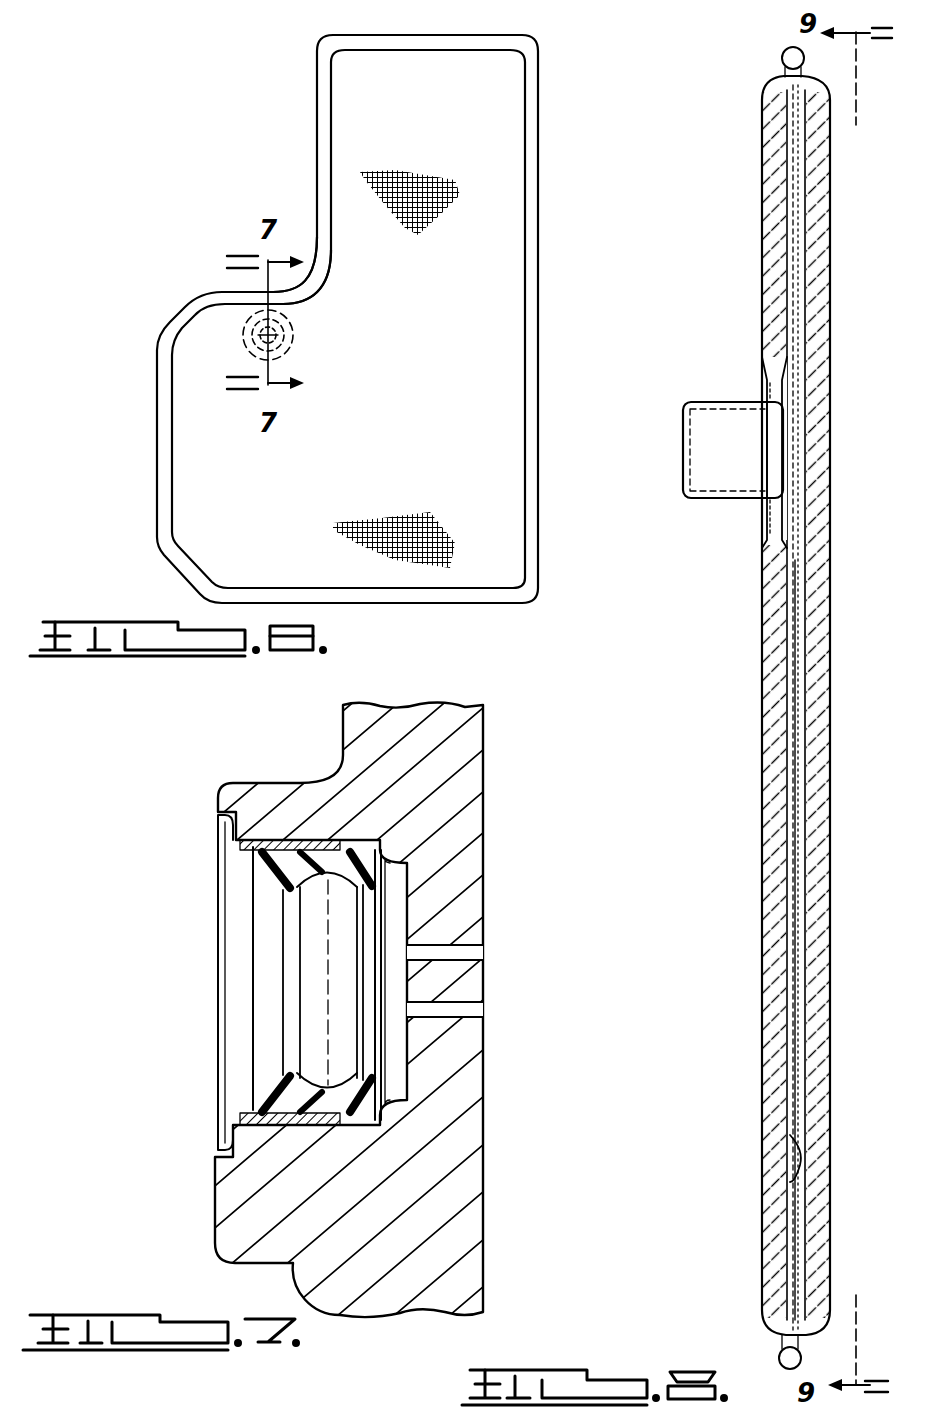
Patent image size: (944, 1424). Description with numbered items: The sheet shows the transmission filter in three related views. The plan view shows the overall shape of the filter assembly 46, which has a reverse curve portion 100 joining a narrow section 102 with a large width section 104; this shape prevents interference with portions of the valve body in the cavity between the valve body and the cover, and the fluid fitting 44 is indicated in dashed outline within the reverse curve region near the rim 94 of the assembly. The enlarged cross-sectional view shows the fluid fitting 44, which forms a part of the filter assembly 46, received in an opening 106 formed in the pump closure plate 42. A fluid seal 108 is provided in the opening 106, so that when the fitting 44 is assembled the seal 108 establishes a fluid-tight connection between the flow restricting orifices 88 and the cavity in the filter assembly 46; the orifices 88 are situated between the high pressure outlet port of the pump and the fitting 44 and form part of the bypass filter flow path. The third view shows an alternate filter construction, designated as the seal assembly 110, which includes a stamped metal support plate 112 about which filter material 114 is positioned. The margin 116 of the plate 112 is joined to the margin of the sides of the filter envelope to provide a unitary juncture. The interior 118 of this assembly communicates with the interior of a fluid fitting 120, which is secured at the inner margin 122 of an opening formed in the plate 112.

In FIG. 7, the pump closure plate 42 is at (360, 807).
In FIG. 6, the fluid fitting 44 is at (295, 333).
In FIG. 6, the filter assembly 46 is at (355, 148).
In FIG. 7, the flow restricting orifices 88 is at (478, 953).
In FIG. 6, the rim 94 is at (530, 324).
In FIG. 6, the reverse curve portion 100 is at (322, 262).
In FIG. 6, the narrow section 102 is at (392, 105).
In FIG. 6, the large width section 104 is at (323, 497).
In FIG. 7, the opening 106 is at (363, 1118).
In FIG. 7, the fluid seal 108 is at (345, 873).
In FIG. 8, the alternate seal assembly 110 is at (750, 190).
In FIG. 8, the stamped metal support plate 112 is at (795, 606).
In FIG. 8, the filter material 114 is at (815, 300).
In FIG. 8, the margin of the plate 116 is at (783, 50).
In FIG. 8, the interior 118 is at (800, 748).
In FIG. 8, the fluid fitting 120 is at (708, 401).
In FIG. 8, the inner margin 122 is at (790, 415).